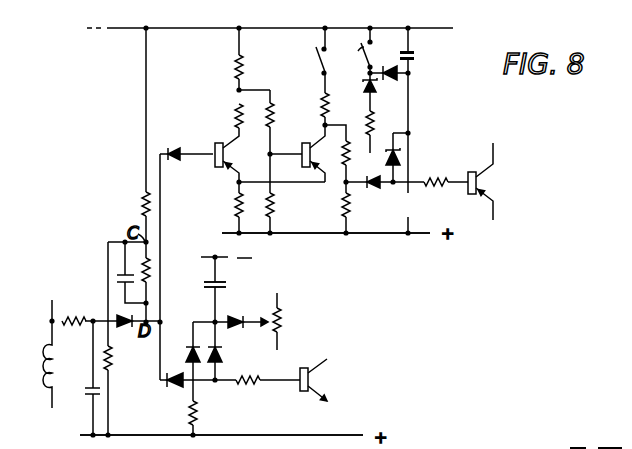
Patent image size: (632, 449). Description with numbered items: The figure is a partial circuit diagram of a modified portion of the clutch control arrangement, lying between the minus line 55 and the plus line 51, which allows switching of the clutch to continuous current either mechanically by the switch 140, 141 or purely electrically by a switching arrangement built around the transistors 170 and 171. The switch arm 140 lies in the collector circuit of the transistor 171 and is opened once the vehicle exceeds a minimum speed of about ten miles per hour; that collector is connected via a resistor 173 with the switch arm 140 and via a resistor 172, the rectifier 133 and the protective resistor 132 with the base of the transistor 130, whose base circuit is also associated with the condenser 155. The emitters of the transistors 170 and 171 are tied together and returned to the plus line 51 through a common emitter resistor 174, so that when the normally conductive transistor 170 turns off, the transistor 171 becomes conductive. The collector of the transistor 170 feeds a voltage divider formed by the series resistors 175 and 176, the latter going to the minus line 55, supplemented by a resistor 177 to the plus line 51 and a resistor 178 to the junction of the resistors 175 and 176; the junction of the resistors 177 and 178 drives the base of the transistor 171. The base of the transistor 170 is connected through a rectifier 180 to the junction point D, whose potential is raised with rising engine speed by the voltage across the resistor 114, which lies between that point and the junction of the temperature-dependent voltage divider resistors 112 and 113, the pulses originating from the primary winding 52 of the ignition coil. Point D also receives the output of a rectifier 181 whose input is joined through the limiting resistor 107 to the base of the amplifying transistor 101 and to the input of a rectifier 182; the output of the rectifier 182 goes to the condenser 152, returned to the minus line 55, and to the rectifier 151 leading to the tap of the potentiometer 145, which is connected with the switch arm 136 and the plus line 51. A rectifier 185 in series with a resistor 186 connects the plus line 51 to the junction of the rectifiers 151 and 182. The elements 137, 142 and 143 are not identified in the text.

The minus line 55 is at (172, 29).
The resistor 176 is at (236, 69).
The resistor 175 is at (236, 112).
The transistor 170 is at (220, 142).
The rectifier 180 is at (172, 162).
The resistor 112 is at (142, 201).
The common emitter resistor 174 is at (236, 205).
The resistor 177 is at (275, 207).
The resistor 178 is at (271, 100).
The resistor 173 is at (322, 106).
The transistor 171 is at (311, 131).
The resistor 172 is at (349, 155).
The rectifier 133 is at (367, 192).
The switch arm 140 is at (317, 56).
The switch 141 is at (326, 50).
The switch arm 136 is at (362, 54).
The diode 137 is at (395, 56).
The condenser 155 is at (418, 54).
The zener diode 143 is at (378, 91).
The resistor 142 is at (378, 118).
The protective resistor 132 is at (434, 178).
The transistor 130 is at (484, 168).
The plus line 51 is at (370, 235).
The potentiometer 145 is at (283, 312).
The condenser 152 is at (226, 289).
The rectifier 151 is at (236, 330).
The rectifier 182 is at (222, 352).
The rectifier 185 is at (186, 352).
The rectifier 181 is at (173, 386).
The resistor 186 is at (198, 414).
The limiting resistor 107 is at (255, 386).
The transistor 101 is at (316, 367).
The primary winding 52 is at (60, 362).
The resistor 113 is at (112, 367).
The resistor 114 is at (153, 272).